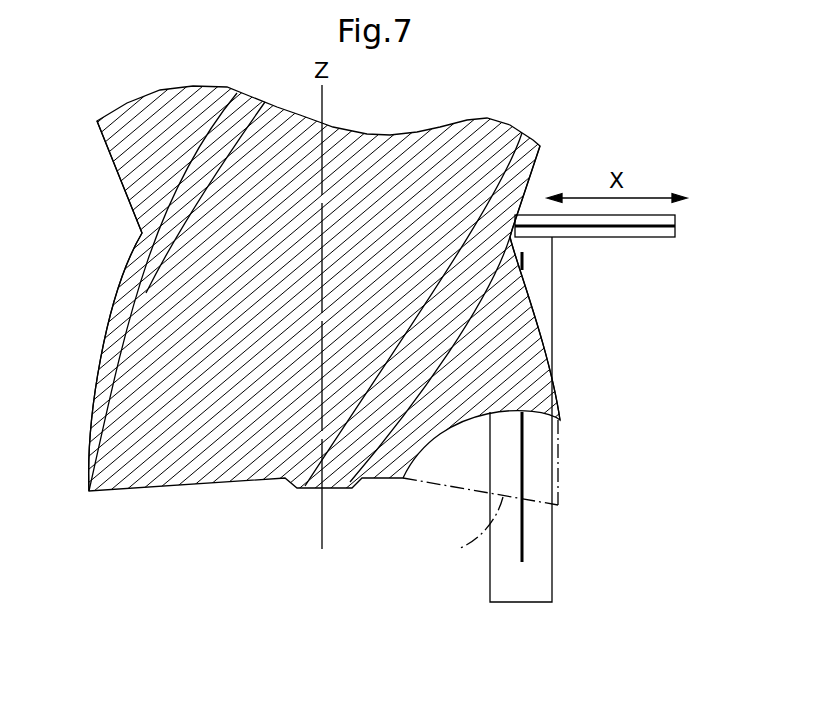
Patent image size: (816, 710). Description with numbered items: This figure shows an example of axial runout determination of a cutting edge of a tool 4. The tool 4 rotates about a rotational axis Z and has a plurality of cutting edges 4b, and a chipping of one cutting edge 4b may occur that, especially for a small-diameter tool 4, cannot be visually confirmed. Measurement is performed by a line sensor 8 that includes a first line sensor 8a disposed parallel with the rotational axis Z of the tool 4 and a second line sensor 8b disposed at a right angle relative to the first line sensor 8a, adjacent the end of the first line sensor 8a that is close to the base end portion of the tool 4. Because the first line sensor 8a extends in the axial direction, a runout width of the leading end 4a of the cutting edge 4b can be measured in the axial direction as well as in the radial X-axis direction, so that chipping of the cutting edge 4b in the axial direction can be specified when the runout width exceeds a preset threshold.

The tool 4 is at (403, 152).
The leading end of the cutting edge 4a is at (468, 544).
The cutting edge 4b is at (108, 332).
The line sensor 8 is at (524, 419).
The first line sensor 8a is at (523, 529).
The second line sensor 8b is at (633, 230).